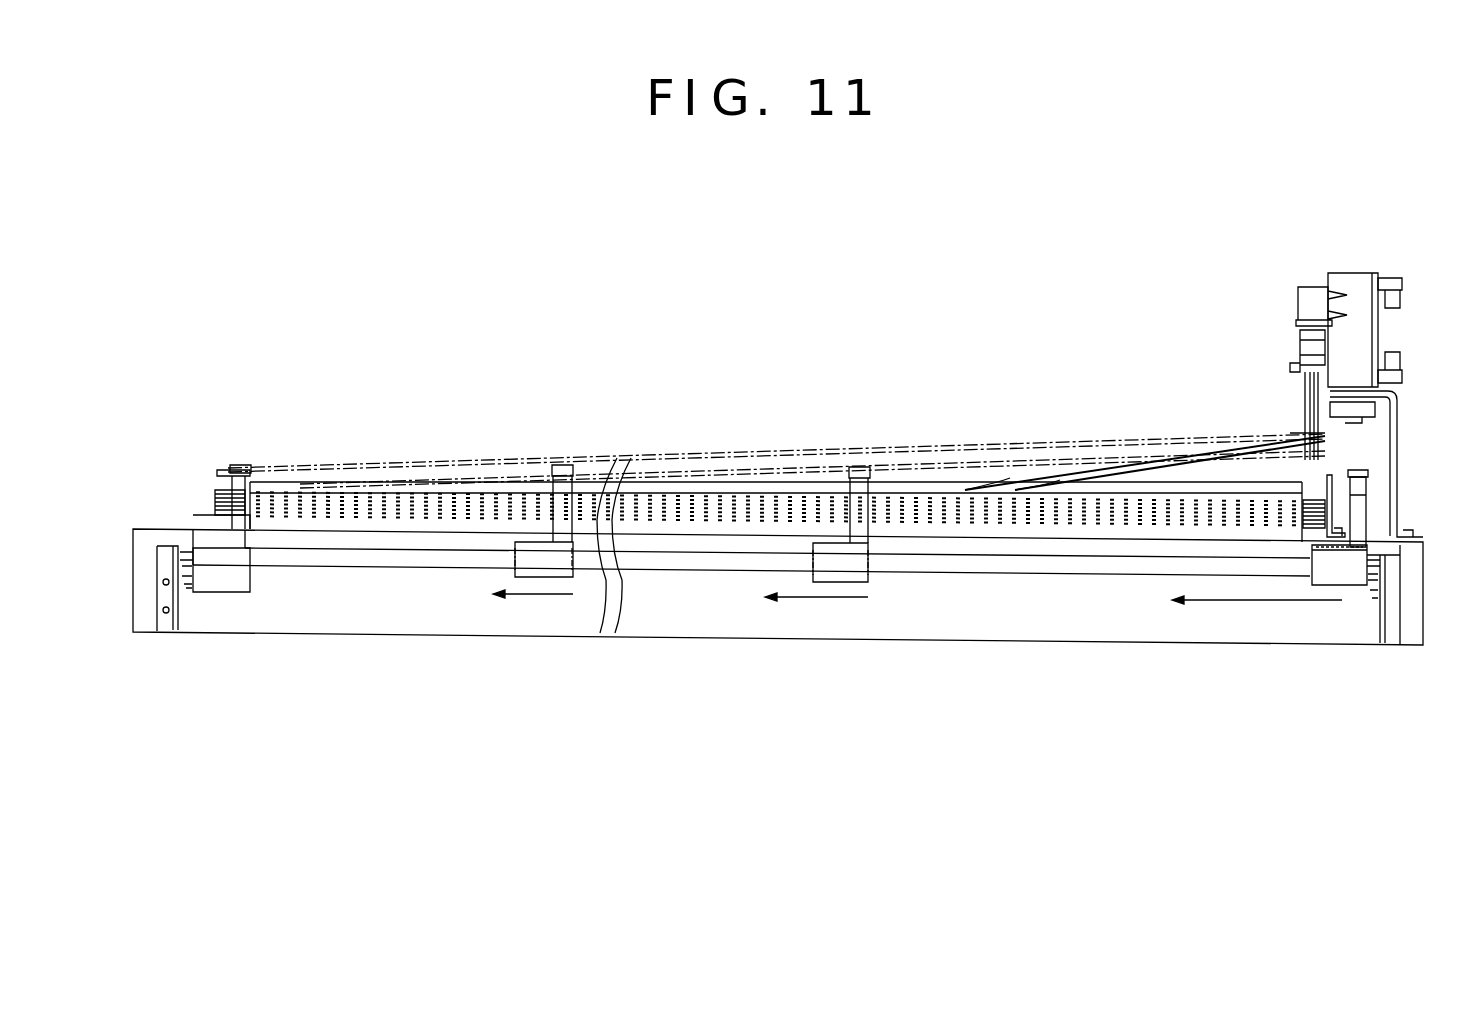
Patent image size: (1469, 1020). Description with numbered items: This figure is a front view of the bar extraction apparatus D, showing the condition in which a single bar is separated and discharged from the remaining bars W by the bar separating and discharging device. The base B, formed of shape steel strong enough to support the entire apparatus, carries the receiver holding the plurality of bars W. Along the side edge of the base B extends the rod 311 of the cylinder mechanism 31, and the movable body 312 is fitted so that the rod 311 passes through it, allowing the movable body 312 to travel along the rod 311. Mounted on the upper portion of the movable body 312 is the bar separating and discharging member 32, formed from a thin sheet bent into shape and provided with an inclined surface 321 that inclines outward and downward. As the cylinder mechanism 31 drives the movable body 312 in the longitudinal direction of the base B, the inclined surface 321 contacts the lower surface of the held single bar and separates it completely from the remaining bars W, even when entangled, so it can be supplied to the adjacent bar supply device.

The bar extraction apparatus D is at (326, 199).
The base B is at (989, 628).
The bars W is at (1063, 447).
The cylinder mechanism 31 is at (1357, 714).
The rod 311 is at (1268, 572).
The movable body 312 is at (254, 590).
The bar separating and discharging member 32 is at (308, 482).
The inclined surface 321 is at (237, 465).